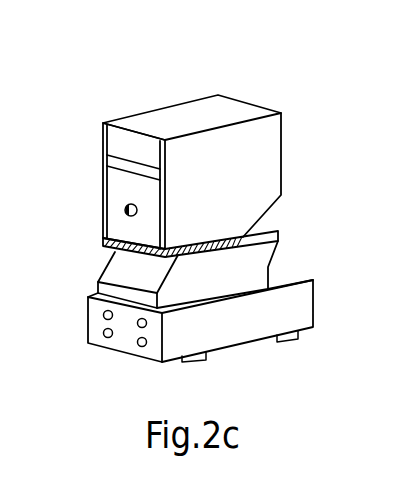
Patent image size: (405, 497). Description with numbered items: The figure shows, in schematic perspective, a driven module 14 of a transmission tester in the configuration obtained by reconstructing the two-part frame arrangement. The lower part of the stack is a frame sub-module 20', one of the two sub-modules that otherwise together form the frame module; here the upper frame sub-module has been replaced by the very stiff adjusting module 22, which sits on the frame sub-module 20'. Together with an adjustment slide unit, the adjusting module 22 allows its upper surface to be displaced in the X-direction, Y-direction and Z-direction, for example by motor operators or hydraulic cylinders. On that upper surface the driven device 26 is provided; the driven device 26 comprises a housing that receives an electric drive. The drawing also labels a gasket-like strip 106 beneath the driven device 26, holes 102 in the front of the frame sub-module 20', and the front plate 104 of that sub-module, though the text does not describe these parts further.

The driven module 14 is at (199, 210).
The driven device 26 is at (251, 103).
The gasket 106 is at (250, 233).
The adjusting module 22 is at (282, 238).
The mounting holes 102 is at (103, 334).
The front plate 104 is at (96, 341).
The frame sub-module 20' is at (176, 338).